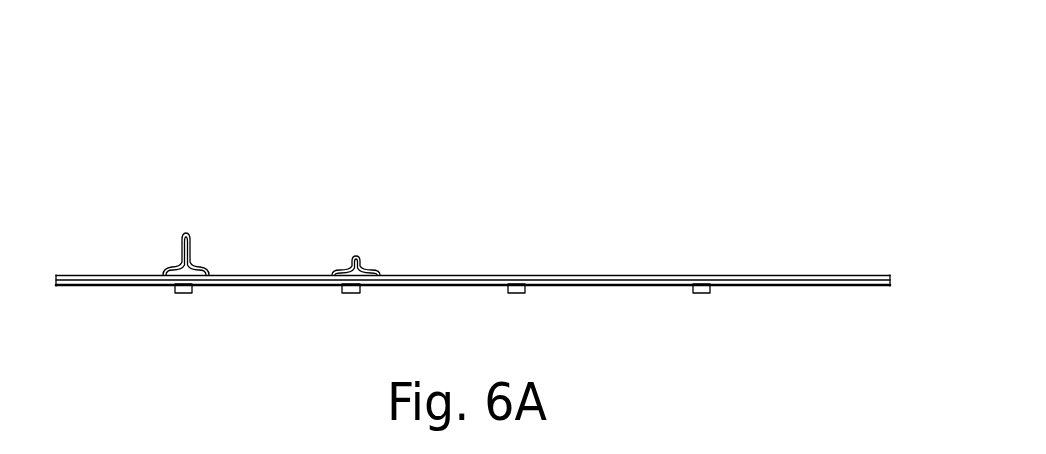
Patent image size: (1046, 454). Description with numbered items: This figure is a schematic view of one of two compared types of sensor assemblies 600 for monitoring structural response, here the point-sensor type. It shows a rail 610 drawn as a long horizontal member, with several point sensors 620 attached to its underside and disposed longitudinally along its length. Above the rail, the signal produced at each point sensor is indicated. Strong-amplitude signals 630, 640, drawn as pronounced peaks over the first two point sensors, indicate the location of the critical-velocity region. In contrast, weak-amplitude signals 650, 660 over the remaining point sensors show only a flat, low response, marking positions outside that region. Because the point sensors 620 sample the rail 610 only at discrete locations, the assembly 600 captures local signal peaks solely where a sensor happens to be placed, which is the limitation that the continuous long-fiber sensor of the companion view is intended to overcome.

The sensor assembly 600 is at (690, 71).
The rail 610 is at (92, 275).
The point sensors 620 is at (507, 289).
The strong-amplitude signal 630 is at (187, 232).
The strong-amplitude signal 640 is at (353, 256).
The weak-amplitude signal 650 is at (520, 232).
The weak-amplitude signal 660 is at (717, 230).